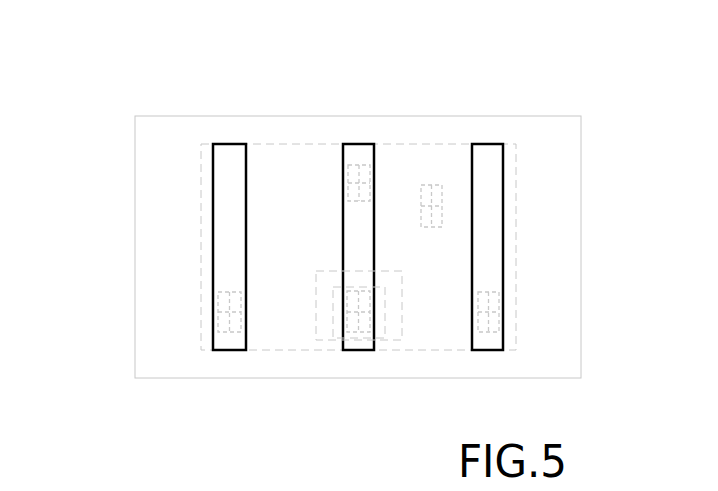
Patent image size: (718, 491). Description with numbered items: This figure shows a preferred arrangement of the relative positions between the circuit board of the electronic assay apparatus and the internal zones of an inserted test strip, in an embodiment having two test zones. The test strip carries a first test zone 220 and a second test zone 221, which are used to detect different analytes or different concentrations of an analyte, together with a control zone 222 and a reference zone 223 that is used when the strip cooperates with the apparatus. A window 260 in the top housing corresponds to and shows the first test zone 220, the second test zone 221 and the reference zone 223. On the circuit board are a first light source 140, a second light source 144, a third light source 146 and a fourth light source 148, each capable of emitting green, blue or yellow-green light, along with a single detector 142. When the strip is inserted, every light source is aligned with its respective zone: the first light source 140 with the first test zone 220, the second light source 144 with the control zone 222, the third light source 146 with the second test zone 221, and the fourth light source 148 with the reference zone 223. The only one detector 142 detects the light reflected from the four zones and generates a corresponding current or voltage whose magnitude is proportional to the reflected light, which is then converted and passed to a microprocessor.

The first light source 140 is at (497, 317).
The detector 142 is at (372, 317).
The second light source 144 is at (227, 297).
The third light source 146 is at (353, 160).
The fourth light source 148 is at (442, 193).
The first test zone 220 is at (495, 247).
The second test zone 221 is at (355, 245).
The control zone 222 is at (232, 245).
The reference zone 223 is at (442, 247).
The window 260 is at (198, 175).